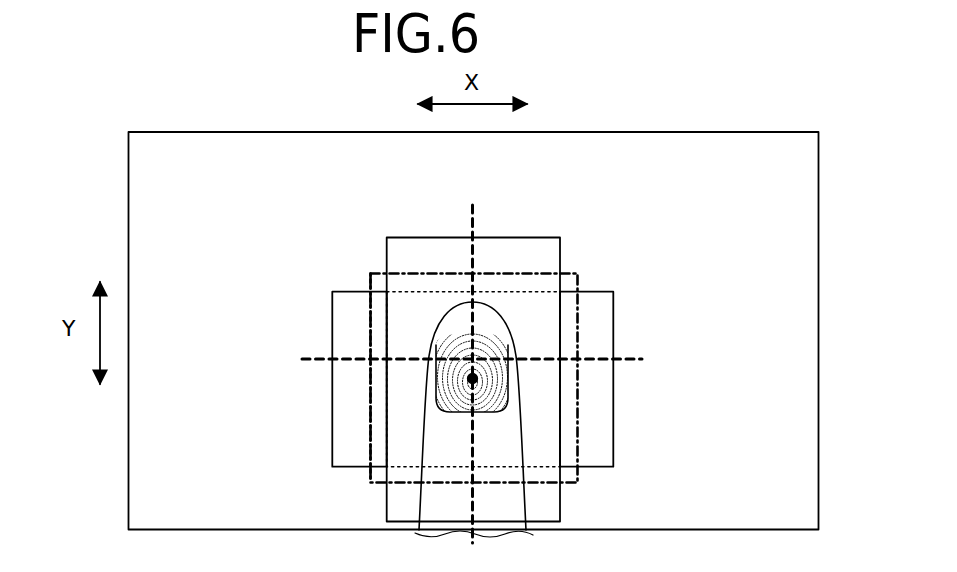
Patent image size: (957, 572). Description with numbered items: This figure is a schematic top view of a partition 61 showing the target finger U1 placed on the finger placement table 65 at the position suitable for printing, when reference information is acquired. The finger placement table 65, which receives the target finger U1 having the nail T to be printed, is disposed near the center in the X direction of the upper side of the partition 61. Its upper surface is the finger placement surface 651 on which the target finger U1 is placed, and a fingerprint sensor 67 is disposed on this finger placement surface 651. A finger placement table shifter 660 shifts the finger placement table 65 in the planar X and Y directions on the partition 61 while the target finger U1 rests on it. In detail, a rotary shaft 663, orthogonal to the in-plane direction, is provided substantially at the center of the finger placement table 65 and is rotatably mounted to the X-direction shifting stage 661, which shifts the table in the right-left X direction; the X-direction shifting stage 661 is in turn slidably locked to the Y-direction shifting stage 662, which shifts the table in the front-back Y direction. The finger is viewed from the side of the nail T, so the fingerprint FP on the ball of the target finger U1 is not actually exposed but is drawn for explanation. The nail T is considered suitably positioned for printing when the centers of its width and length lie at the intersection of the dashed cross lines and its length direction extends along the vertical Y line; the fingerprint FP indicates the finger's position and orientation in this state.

The partition 61 is at (125, 160).
The finger placement table 65 is at (374, 270).
The fingerprint sensor 67 is at (370, 285).
The finger placement surface 651 is at (506, 299).
The finger placement table shifter 660 is at (325, 330).
The X-direction shifting stage 661 is at (552, 257).
The Y-direction shifting stage 662 is at (607, 335).
The rotary shaft 663 is at (476, 381).
The nail T is at (450, 322).
The fingerprint FP is at (437, 365).
The target finger U1 is at (428, 433).